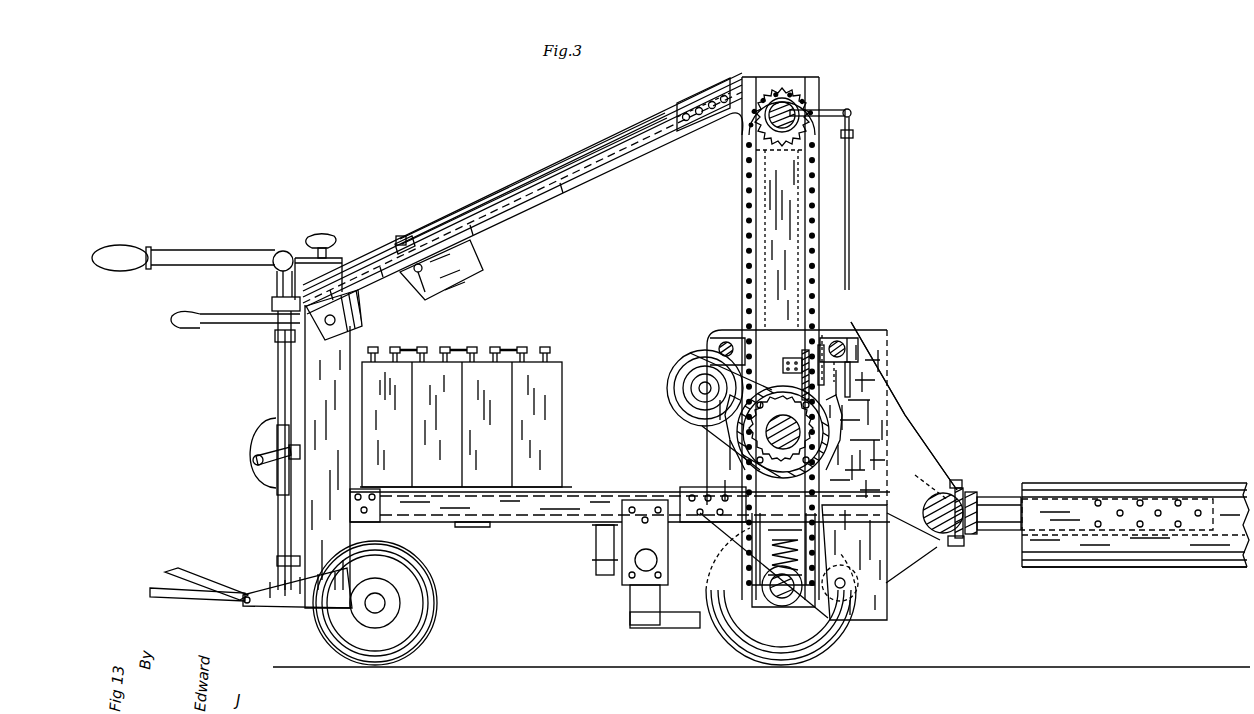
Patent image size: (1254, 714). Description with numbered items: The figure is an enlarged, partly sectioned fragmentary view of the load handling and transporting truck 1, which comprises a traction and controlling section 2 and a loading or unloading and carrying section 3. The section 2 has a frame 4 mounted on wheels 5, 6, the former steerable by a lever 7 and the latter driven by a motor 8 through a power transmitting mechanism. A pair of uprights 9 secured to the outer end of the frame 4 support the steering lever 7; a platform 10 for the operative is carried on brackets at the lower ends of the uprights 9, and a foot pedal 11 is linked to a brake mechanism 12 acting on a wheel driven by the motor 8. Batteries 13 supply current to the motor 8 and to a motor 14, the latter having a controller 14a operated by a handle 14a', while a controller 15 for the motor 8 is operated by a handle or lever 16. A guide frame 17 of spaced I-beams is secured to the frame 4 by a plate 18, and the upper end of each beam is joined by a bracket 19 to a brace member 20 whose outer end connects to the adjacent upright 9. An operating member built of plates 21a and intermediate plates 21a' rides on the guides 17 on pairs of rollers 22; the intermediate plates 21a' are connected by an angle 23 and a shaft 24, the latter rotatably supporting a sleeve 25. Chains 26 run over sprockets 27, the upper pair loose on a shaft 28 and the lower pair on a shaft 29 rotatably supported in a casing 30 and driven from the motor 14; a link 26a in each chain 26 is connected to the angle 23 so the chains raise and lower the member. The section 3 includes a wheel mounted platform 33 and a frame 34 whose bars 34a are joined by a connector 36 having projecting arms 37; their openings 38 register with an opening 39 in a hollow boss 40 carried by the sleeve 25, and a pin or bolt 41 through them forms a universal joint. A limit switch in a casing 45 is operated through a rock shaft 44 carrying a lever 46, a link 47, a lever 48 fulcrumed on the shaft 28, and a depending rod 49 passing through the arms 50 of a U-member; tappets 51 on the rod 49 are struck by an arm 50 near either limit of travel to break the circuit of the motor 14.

The load handling and transporting truck 1 is at (913, 406).
The traction and controlling section 2 is at (528, 524).
The loading or unloading and carrying section 3 is at (1134, 573).
The frame 4 is at (474, 526).
The wheels 5 is at (318, 626).
The wheels 6 is at (730, 636).
The lever 7 is at (189, 256).
The motor 8 is at (690, 498).
The uprights 9 is at (346, 350).
The platform 10 is at (152, 590).
The foot pedal 11 is at (196, 578).
The brake mechanism 12 is at (600, 570).
The batteries 13 is at (560, 364).
The motor 14 is at (676, 406).
The controller 14a is at (336, 257).
The handle 14a' is at (319, 232).
The controller 15 is at (248, 452).
The handle or lever 16 is at (212, 316).
The guide frame 17 is at (808, 242).
The plate 18 is at (750, 515).
The bracket 19 is at (738, 88).
The brace member 20 is at (573, 188).
The plates 21a is at (823, 475).
The intermediate plates 21a' is at (914, 406).
The rollers 22 is at (712, 350).
The angle 23 is at (793, 356).
The shaft 24 is at (940, 550).
The sleeve 25 is at (926, 504).
The chains 26 is at (742, 228).
The link 26a is at (822, 385).
The sprockets 27 is at (755, 150).
The shaft 28 is at (764, 126).
The shaft 29 is at (745, 462).
The casing 30 is at (742, 446).
The platform 33 is at (1130, 483).
The frame 34 is at (1208, 568).
The bars 34a is at (1142, 562).
The connector 36 is at (1010, 498).
The arms 37 is at (975, 494).
The openings 38 is at (928, 478).
The opening 39 is at (962, 494).
The hollow boss 40 is at (978, 516).
The pin or bolt 41 is at (958, 548).
The rock shaft 44 is at (422, 292).
The casing 45 is at (480, 270).
The lever 46 is at (420, 243).
The link 47 is at (462, 224).
The lever 48 is at (796, 96).
The rod 49 is at (850, 180).
The arms 50 is at (856, 342).
The tappets 51 is at (854, 134).